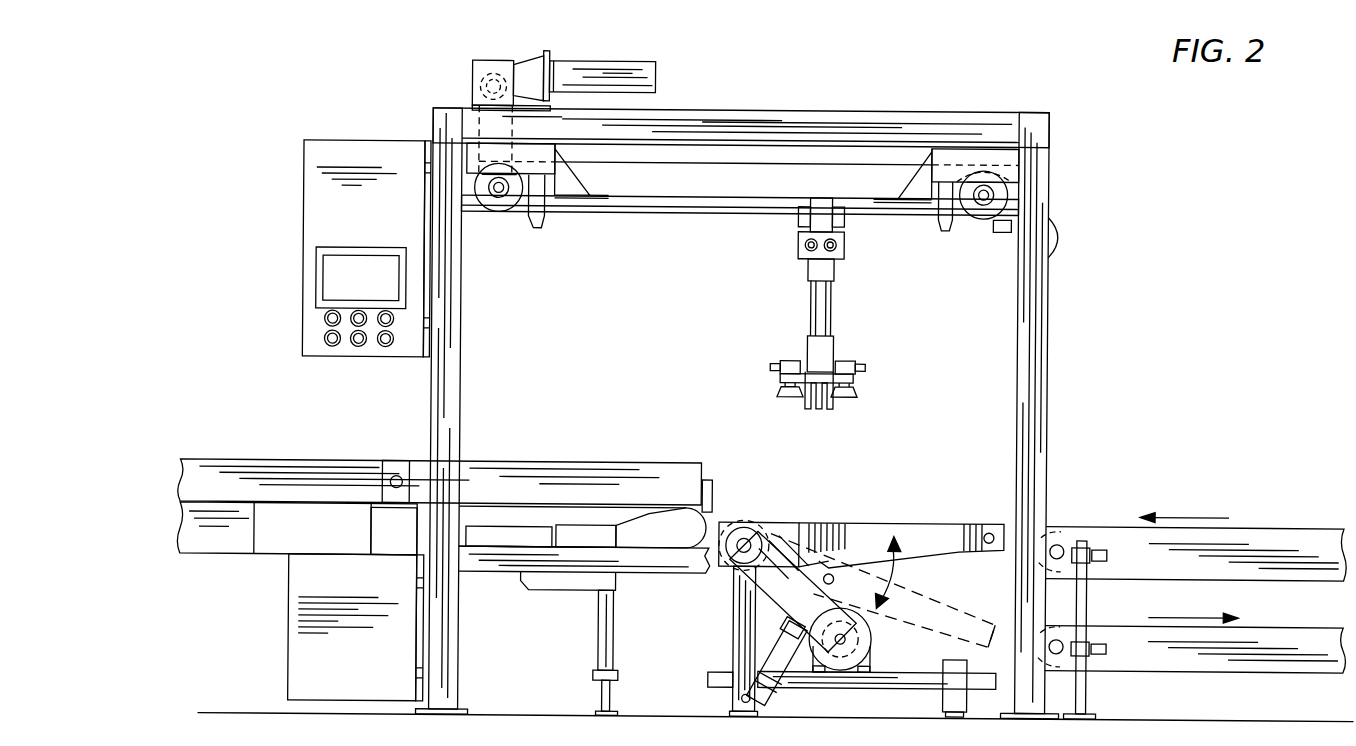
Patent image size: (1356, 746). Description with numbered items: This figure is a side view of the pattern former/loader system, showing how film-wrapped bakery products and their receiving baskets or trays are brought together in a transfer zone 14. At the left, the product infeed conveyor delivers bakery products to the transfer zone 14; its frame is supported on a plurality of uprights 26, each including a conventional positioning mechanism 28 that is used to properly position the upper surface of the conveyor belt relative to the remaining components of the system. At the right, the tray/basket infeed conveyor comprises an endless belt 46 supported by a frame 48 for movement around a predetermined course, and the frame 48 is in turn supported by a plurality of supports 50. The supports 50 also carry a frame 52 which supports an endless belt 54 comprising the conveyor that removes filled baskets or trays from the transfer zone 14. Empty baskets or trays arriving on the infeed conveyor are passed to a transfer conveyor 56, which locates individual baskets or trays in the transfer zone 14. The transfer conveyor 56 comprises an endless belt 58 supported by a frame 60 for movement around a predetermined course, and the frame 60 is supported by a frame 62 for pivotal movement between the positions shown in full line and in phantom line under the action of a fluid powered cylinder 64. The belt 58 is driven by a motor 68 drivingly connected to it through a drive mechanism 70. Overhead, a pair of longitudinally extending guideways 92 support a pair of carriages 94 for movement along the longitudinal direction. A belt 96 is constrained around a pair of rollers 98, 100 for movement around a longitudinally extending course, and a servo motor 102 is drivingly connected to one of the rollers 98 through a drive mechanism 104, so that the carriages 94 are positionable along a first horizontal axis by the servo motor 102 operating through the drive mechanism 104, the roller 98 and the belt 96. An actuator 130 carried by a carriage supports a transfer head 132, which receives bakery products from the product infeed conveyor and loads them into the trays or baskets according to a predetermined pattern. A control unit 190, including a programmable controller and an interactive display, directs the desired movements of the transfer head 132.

The transfer zone 14 is at (636, 450).
The uprights 26 is at (604, 697).
The positioning mechanism 28 is at (616, 654).
The endless belt 46 is at (1038, 542).
The frame 48 is at (1282, 540).
The supports 50 is at (1092, 708).
The frame 52 is at (1268, 670).
The endless belt 54 is at (1040, 640).
The transfer conveyor 56 is at (843, 515).
The endless belt 58 is at (865, 520).
The frame 60 is at (917, 530).
The frame 62 is at (735, 613).
The fluid powered cylinder 64 is at (767, 650).
The motor 68 is at (876, 661).
The drive mechanism 70 is at (760, 581).
The guideways 92 is at (676, 214).
The carriages 94 is at (796, 226).
The belt 96 is at (800, 158).
The roller 98 is at (501, 212).
The roller 100 is at (977, 214).
The servo motor 102 is at (615, 62).
The drive mechanism 104 is at (469, 76).
The actuator 130 is at (798, 318).
The transfer head 132 is at (858, 356).
The control unit 190 is at (296, 160).